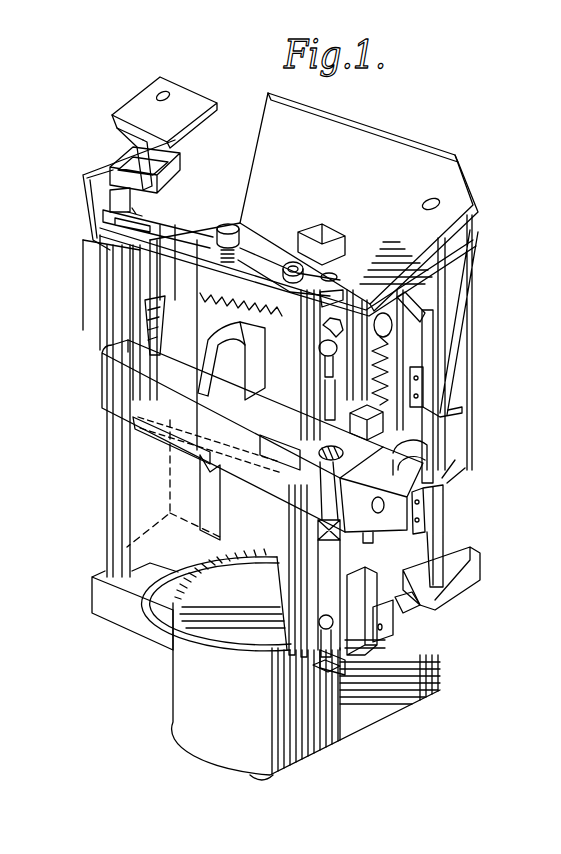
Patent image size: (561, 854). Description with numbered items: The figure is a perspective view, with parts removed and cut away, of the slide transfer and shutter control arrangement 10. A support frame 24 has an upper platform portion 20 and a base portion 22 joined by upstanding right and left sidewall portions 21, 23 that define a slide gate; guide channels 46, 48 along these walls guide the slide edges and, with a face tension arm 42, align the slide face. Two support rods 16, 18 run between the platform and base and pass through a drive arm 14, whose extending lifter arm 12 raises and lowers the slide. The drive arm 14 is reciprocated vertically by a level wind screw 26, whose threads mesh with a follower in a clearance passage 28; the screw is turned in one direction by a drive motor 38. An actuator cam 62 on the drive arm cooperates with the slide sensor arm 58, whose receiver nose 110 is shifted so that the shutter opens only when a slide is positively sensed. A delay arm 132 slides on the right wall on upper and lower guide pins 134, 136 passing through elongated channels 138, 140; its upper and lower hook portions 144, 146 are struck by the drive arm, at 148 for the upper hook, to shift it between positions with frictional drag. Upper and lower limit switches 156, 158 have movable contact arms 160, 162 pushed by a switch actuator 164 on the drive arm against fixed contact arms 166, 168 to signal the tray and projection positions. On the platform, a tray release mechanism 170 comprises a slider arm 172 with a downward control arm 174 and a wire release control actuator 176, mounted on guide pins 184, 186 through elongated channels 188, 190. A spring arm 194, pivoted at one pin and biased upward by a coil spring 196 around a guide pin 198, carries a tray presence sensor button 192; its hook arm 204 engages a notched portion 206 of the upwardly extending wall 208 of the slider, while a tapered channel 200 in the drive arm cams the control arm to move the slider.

The slide transfer and shutter control arrangement 10 is at (55, 215).
The lifter arm 12 is at (232, 352).
The drive arm 14 is at (105, 390).
The support rod 16 is at (118, 538).
The support rod 18 is at (290, 587).
The upper platform portion 20 is at (478, 210).
The right sidewall portion 21 is at (340, 292).
The base portion 22 is at (148, 628).
The left sidewall portion 23 is at (135, 492).
The support frame 24 is at (96, 588).
The level wind screw 26 is at (320, 528).
The clearance passage 28 is at (337, 458).
The drive motor 38 is at (220, 757).
The face tension arm 42 is at (140, 110).
The guide channel 46 is at (335, 228).
The guide channel 48 is at (116, 152).
The slide sensor arm 58 is at (378, 622).
The actuator cam 62 is at (410, 440).
The receiver nose 110 is at (395, 615).
The delay arm 132 is at (318, 400).
The upper guide pin 134 is at (322, 352).
The lower guide pin 136 is at (345, 660).
The upper channel 138 is at (323, 332).
The lower channel 140 is at (333, 625).
The upper hook portion 144 is at (396, 252).
The lower hook portion 146 is at (335, 668).
The drive arm contact portion 148 is at (325, 440).
The upper limit switch 156 is at (430, 385).
The lower limit switch 158 is at (432, 512).
The first movable contact arm 160 is at (410, 298).
The first movable contact arm 162 is at (418, 603).
The switch actuator 164 is at (440, 460).
The second fixed contact arm 166 is at (433, 320).
The second fixed contact arm 168 is at (455, 552).
The tray release mechanism 170 is at (215, 242).
The slider arm 172 is at (278, 300).
The control arm 174 is at (301, 347).
The wire release control actuator 176 is at (90, 180).
The guide pin 184 is at (175, 232).
The guide pin 186 is at (322, 250).
The elongated channel 188 is at (105, 235).
The elongated channel 190 is at (300, 320).
The tray presence sensor button 192 is at (245, 250).
The spring arm 194 is at (262, 275).
The coil spring 196 is at (220, 262).
The guide pin 198 is at (150, 305).
The tapered channel 200 is at (318, 500).
The hook arm 204 is at (255, 262).
The notched portion 206 is at (247, 213).
The upwardly extending wall 208 is at (180, 218).